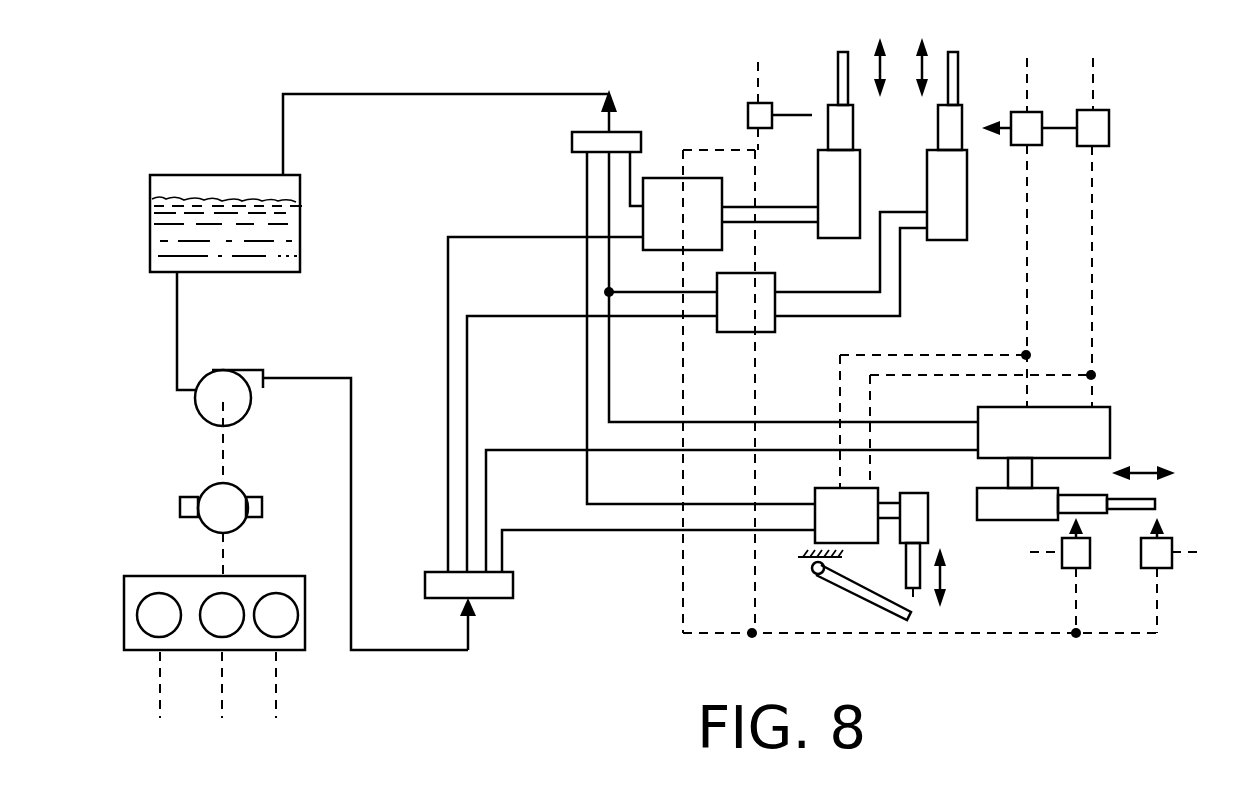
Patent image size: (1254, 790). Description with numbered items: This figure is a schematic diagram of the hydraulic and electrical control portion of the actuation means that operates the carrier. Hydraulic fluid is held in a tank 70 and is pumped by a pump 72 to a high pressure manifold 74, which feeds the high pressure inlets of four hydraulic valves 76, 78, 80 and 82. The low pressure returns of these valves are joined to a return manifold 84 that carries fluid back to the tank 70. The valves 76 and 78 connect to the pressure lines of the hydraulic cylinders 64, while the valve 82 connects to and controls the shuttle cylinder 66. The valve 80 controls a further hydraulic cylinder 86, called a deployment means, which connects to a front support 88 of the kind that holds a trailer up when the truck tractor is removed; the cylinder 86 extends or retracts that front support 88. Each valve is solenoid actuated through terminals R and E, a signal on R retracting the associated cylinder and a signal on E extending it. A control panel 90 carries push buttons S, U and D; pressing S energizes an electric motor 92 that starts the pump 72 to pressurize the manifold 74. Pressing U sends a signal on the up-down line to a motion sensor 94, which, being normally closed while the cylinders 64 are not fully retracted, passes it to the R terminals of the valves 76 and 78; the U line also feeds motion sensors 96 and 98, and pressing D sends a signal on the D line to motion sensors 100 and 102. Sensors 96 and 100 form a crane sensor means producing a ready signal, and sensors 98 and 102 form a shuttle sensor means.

The hydraulic cylinders 64 is at (927, 178).
The shuttle cylinder 66 is at (995, 521).
The tank 70 is at (200, 176).
The pump 72 is at (214, 378).
The high pressure manifold 74 is at (513, 586).
The hydraulic valve 76 is at (663, 178).
The hydraulic valve 78 is at (758, 333).
The hydraulic valve 80 is at (832, 488).
The hydraulic valve 82 is at (1110, 418).
The return manifold 84 is at (572, 142).
The hydraulic cylinder 86 is at (955, 478).
The front support 88 is at (866, 608).
The control panel 90 is at (150, 576).
The electric motor 92 is at (212, 484).
The motion sensor 94 is at (748, 110).
The motion sensor 96 is at (1041, 146).
The motion sensor 98 is at (1172, 566).
The motion sensor 100 is at (1112, 122).
The motion sensor 102 is at (1090, 553).